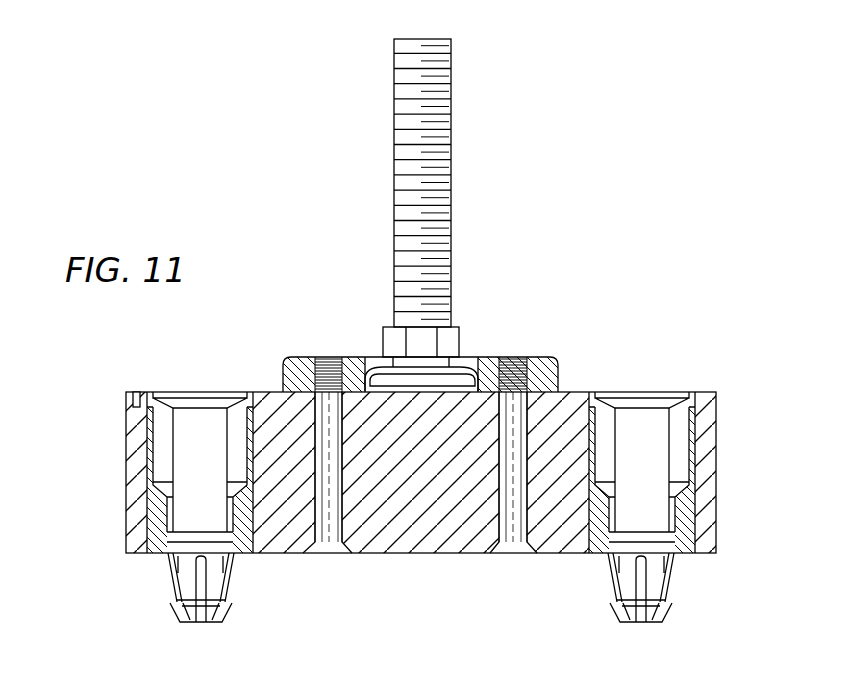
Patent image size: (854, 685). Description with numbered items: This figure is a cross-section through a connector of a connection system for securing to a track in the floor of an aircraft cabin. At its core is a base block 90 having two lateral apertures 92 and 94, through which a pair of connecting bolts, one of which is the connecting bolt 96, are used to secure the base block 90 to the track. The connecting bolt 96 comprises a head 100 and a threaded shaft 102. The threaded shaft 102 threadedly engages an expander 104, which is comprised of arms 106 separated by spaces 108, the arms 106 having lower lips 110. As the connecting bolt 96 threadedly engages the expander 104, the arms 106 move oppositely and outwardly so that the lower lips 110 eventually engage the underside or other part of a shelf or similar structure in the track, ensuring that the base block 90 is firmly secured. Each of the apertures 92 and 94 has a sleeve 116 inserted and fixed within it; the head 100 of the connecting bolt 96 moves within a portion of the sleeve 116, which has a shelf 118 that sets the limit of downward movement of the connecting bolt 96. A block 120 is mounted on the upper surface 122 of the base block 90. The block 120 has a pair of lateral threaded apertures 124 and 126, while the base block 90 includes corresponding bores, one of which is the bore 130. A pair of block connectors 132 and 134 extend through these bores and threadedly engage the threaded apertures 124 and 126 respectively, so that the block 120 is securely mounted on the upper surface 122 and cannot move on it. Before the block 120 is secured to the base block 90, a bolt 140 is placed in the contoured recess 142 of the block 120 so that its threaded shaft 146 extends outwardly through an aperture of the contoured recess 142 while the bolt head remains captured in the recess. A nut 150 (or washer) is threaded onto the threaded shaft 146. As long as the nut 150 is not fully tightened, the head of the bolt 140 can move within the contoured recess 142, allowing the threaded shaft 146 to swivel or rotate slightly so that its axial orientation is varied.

The base block 90 is at (422, 550).
The lateral aperture 92 is at (152, 520).
The lateral aperture 94 is at (685, 520).
The connecting bolt 96 is at (187, 470).
The head 100 is at (158, 392).
The threaded shaft 102 is at (197, 427).
The expander 104 is at (168, 611).
The arms 106 is at (213, 585).
The spaces 108 is at (202, 578).
The lower lips 110 is at (205, 622).
The sleeve 116 is at (682, 548).
The shelf 118 is at (677, 490).
The block 120 is at (547, 360).
The upper surface 122 is at (268, 392).
The lateral threaded aperture 124 is at (527, 380).
The lateral threaded aperture 126 is at (335, 358).
The bore 130 is at (528, 530).
The block connector 132 is at (325, 525).
The block connector 134 is at (465, 517).
The bolt 140 is at (452, 53).
The contoured recess 142 is at (458, 368).
The threaded shaft 146 is at (410, 147).
The nut 150 is at (417, 333).